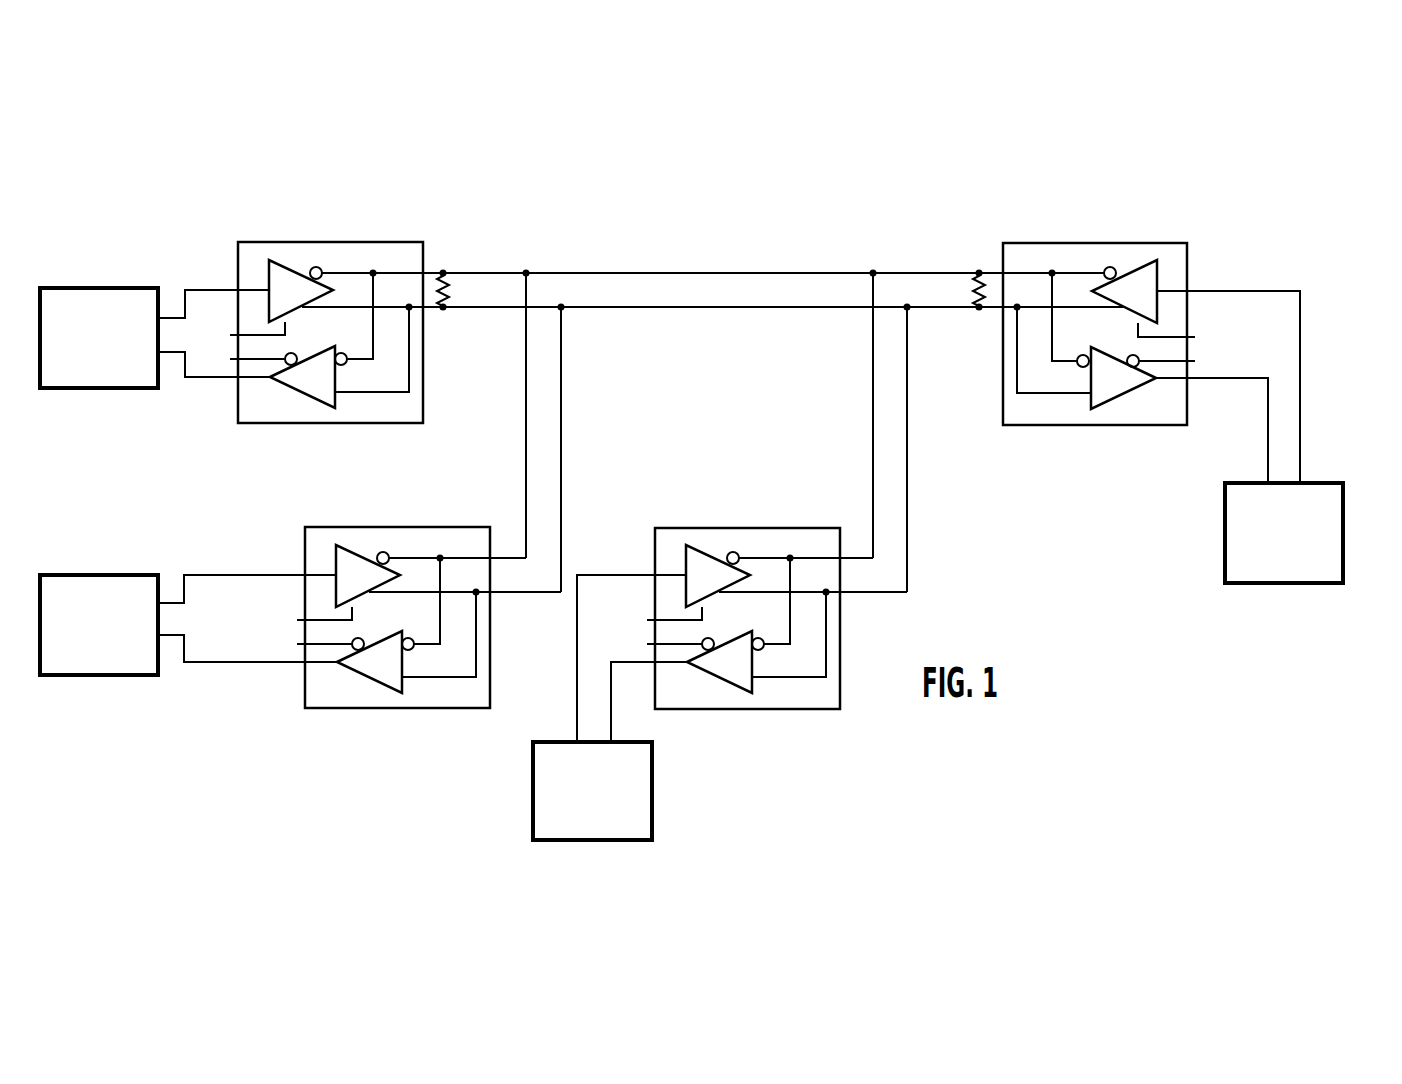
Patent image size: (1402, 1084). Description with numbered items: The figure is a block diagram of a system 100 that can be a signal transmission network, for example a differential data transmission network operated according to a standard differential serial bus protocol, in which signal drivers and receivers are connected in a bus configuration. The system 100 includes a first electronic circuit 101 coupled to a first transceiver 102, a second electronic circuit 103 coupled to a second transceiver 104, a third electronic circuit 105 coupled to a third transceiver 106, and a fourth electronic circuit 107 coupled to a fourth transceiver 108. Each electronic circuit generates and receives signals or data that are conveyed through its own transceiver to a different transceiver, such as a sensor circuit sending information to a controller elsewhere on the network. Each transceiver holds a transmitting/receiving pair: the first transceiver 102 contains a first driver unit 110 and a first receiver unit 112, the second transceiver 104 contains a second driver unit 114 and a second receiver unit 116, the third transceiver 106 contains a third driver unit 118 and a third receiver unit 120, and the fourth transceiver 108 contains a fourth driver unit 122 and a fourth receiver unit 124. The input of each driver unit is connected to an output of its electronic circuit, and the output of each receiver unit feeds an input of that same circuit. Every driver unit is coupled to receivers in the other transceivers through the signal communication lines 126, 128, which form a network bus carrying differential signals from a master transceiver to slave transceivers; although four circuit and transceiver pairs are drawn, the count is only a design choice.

The system 100 is at (1295, 256).
The first electronic circuit 101 is at (108, 288).
The first transceiver 102 is at (409, 252).
The second electronic circuit 103 is at (1318, 483).
The second transceiver 104 is at (1176, 259).
The third electronic circuit 105 is at (106, 575).
The third transceiver 106 is at (398, 540).
The fourth electronic circuit 107 is at (652, 808).
The fourth transceiver 108 is at (745, 540).
The first driver unit 110 is at (278, 265).
The first receiver unit 112 is at (318, 390).
The second driver unit 114 is at (1140, 265).
The second receiver unit 116 is at (1133, 380).
The third driver unit 118 is at (345, 560).
The third receiver unit 120 is at (392, 678).
The fourth driver unit 122 is at (695, 560).
The fourth receiver unit 124 is at (740, 680).
The signal communication line 126 is at (697, 273).
The signal communication line 128 is at (704, 308).